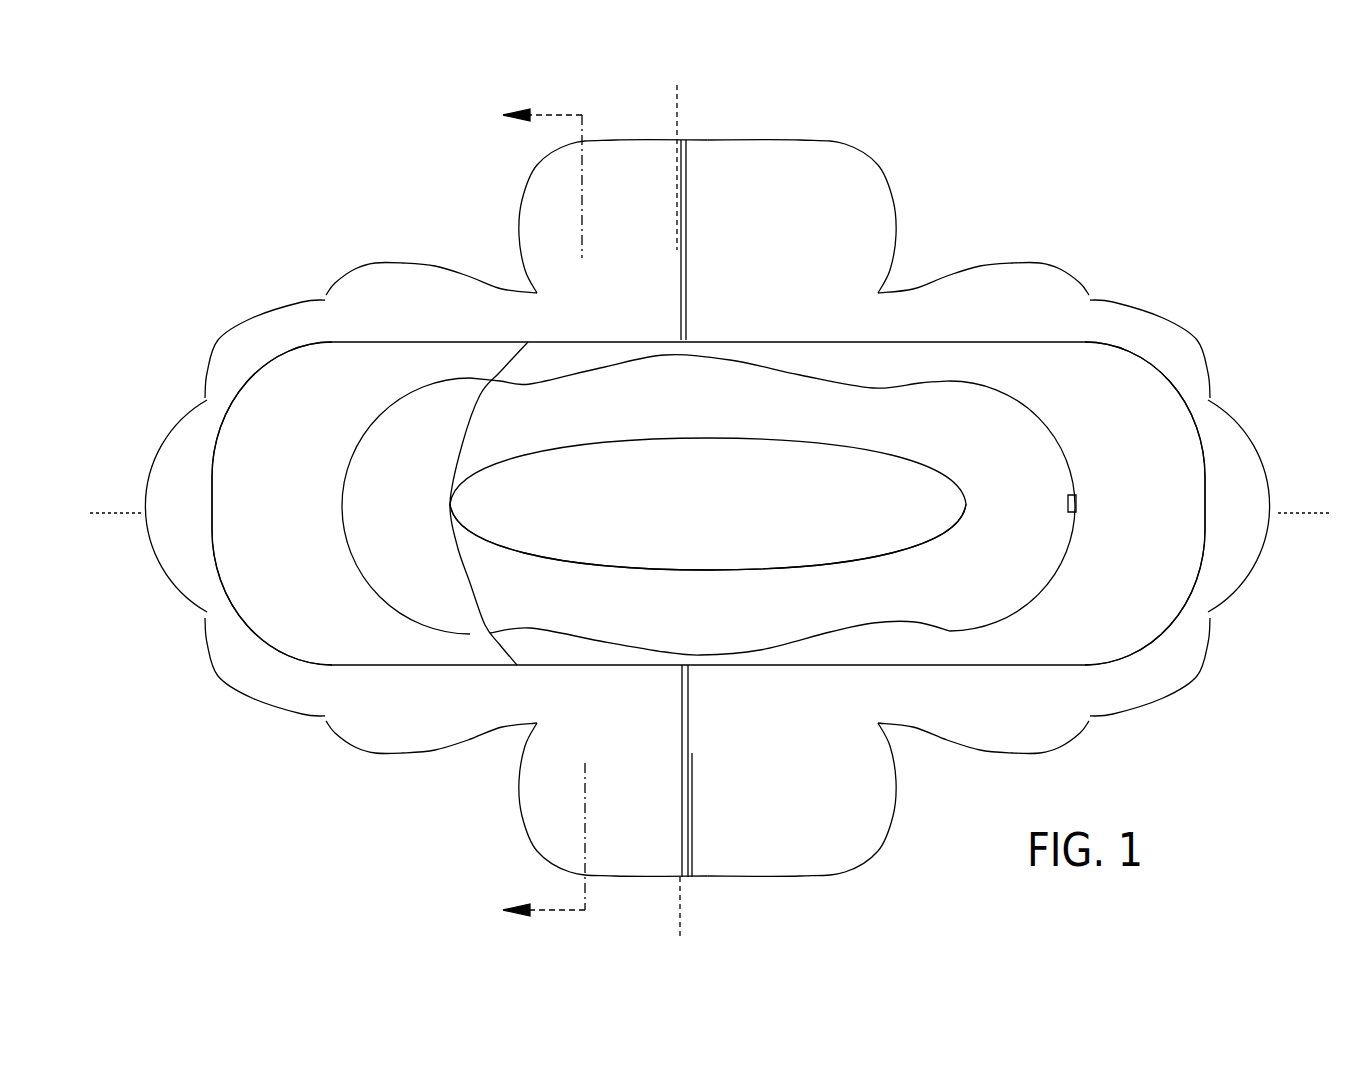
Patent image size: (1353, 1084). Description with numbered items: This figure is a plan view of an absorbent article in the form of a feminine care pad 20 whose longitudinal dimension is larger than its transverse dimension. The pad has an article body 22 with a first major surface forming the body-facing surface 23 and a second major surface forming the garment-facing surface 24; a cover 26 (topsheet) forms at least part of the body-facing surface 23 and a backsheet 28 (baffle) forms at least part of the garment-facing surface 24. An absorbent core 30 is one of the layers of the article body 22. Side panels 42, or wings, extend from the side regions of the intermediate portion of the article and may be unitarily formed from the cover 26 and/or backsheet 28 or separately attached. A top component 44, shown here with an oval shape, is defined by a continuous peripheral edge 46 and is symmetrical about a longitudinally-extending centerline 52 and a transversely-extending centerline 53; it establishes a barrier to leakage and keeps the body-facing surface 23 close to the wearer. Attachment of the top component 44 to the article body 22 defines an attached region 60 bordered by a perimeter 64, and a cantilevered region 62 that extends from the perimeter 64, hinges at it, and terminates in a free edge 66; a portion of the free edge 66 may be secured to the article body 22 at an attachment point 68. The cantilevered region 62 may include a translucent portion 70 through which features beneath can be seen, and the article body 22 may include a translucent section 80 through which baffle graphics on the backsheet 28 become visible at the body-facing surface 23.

The feminine care pad 20 is at (789, 120).
The article body 22 is at (1147, 365).
The body-facing surface 23 is at (1148, 557).
The garment-facing surface 24 is at (1198, 702).
The cover 26 is at (1060, 288).
The backsheet 28 is at (1100, 290).
The absorbent core 30 is at (1187, 458).
The side panels 42 is at (838, 167).
The top component 44 is at (783, 382).
The continuous peripheral edge 46 is at (830, 630).
The longitudinally-extending centerline 52 is at (118, 514).
The transversely-extending centerline 53 is at (681, 118).
The attached region 60 is at (733, 502).
The cantilevered region 62 is at (1018, 447).
The perimeter 64 is at (688, 570).
The free edge 66 is at (1035, 602).
The attachment point 68 is at (1077, 506).
The translucent portion 70 is at (413, 508).
The translucent section 80 is at (293, 508).